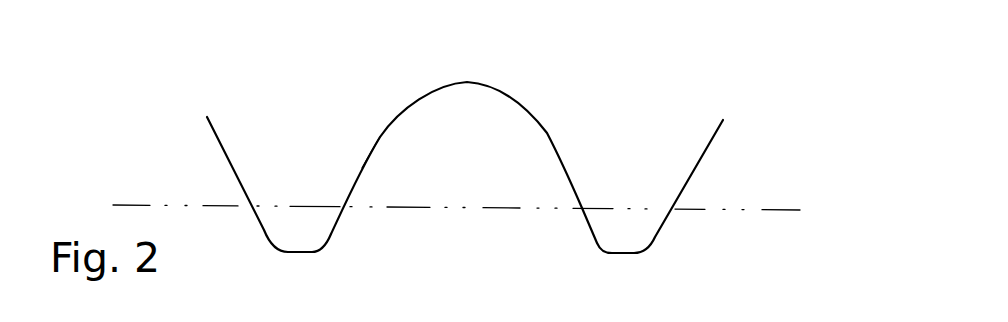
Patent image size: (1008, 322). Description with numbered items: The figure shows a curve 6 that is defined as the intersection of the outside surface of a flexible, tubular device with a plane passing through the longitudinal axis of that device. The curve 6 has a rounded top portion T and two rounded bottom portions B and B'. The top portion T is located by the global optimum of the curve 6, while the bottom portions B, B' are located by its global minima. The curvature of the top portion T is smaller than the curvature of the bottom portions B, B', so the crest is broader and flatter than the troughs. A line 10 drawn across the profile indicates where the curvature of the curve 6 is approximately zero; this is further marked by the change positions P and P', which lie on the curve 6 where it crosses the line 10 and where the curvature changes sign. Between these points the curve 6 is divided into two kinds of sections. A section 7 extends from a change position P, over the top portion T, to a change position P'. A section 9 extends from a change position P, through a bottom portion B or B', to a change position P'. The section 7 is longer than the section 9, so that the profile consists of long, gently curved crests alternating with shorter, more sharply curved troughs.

The curve 6 is at (727, 112).
The section 7 is at (378, 138).
The section 9 is at (587, 232).
The line 10 is at (775, 216).
The rounded top portion T is at (525, 88).
The change position P is at (483, 145).
The change position P' is at (435, 151).
The rounded bottom portion B is at (296, 286).
The rounded bottom portion B' is at (627, 290).